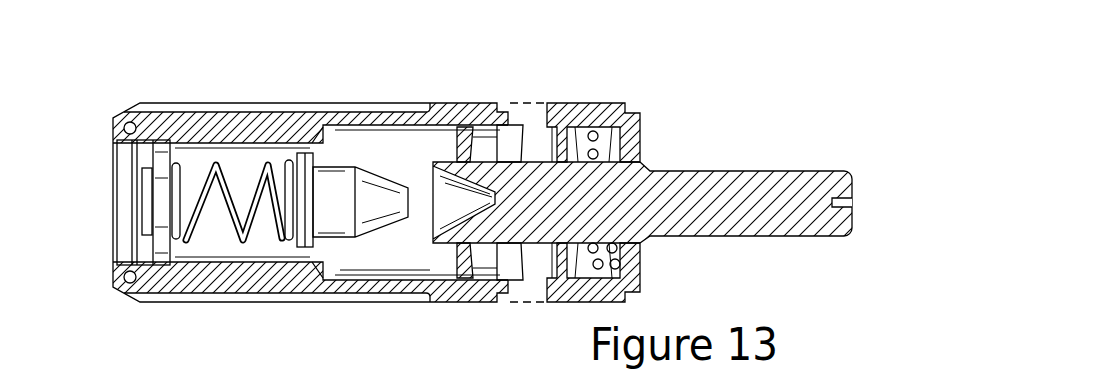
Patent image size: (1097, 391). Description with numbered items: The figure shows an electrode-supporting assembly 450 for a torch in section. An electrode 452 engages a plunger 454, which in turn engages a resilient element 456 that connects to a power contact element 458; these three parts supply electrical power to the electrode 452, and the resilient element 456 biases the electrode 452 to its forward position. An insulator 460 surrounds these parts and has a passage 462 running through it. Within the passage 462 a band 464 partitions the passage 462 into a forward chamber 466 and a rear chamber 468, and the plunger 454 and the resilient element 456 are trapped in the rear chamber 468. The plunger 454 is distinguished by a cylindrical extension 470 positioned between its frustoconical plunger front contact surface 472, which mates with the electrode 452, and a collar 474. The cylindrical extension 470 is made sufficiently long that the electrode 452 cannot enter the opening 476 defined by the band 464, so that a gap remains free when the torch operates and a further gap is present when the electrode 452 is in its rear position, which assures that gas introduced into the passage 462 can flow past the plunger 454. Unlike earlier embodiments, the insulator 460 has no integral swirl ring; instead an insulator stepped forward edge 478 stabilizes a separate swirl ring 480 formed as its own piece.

The electrode-supporting assembly 450 is at (442, 196).
The electrode 452 is at (790, 180).
The plunger 454 is at (340, 155).
The resilient element 456 is at (222, 163).
The power contact element 458 is at (148, 227).
The insulator 460 is at (470, 100).
The passage 462 is at (418, 247).
The band 464 is at (313, 243).
The forward chamber 466 is at (442, 258).
The rear chamber 468 is at (213, 248).
The cylindrical extension 470 is at (338, 222).
The plunger front contact surface 472 is at (368, 192).
The collar 474 is at (300, 160).
The opening 476 is at (302, 247).
The insulator stepped forward edge 478 is at (503, 108).
The swirl ring 480 is at (597, 108).